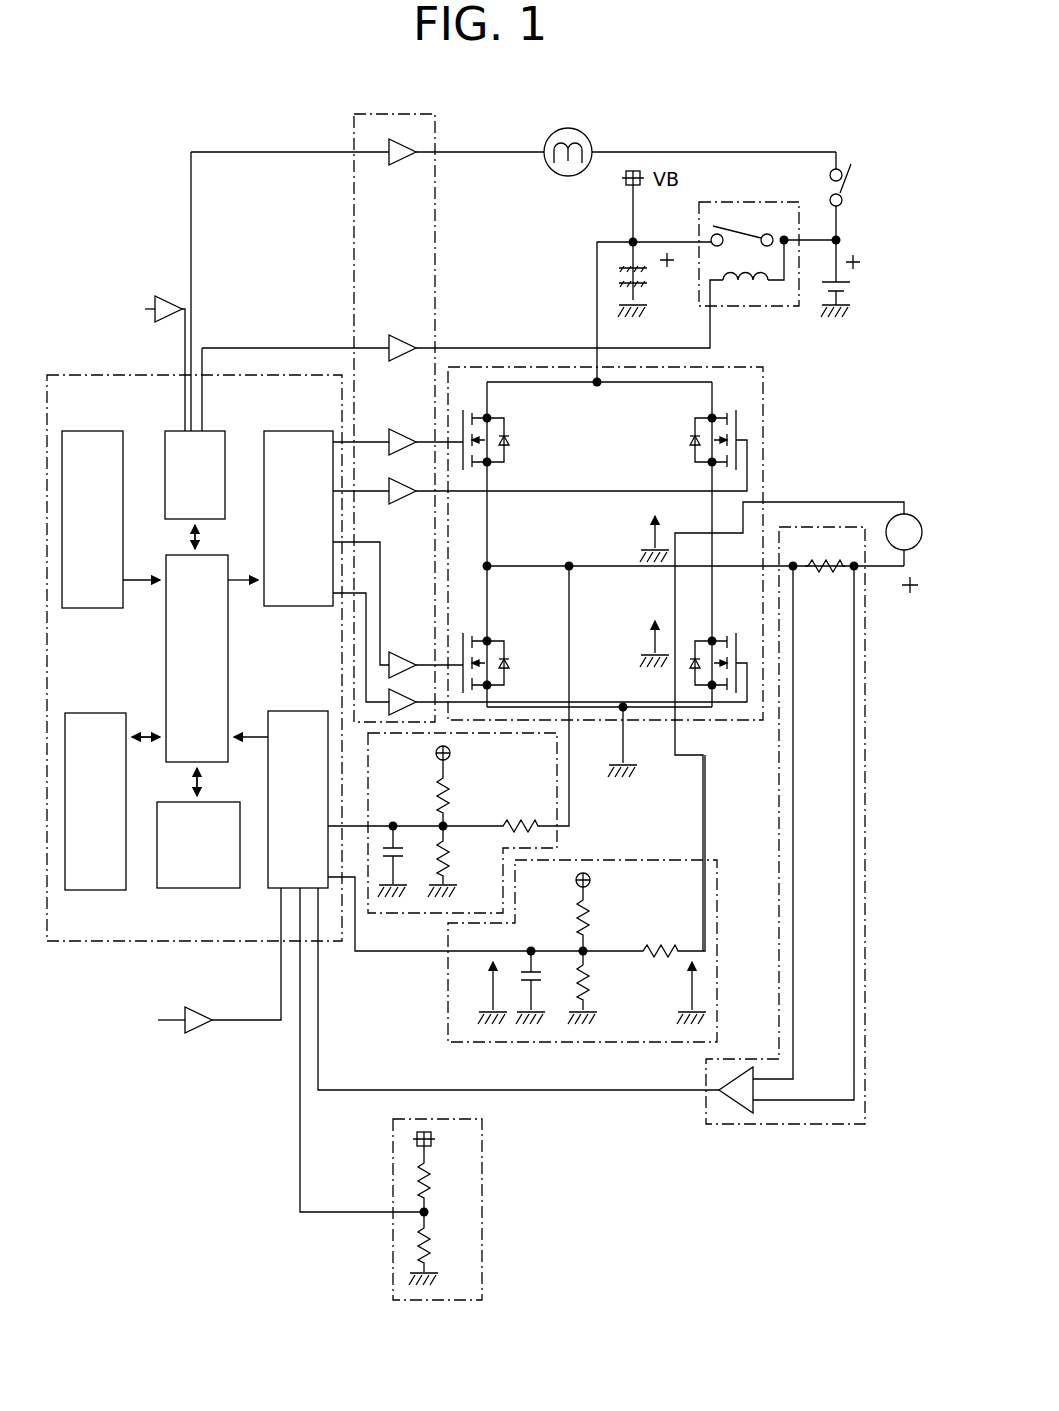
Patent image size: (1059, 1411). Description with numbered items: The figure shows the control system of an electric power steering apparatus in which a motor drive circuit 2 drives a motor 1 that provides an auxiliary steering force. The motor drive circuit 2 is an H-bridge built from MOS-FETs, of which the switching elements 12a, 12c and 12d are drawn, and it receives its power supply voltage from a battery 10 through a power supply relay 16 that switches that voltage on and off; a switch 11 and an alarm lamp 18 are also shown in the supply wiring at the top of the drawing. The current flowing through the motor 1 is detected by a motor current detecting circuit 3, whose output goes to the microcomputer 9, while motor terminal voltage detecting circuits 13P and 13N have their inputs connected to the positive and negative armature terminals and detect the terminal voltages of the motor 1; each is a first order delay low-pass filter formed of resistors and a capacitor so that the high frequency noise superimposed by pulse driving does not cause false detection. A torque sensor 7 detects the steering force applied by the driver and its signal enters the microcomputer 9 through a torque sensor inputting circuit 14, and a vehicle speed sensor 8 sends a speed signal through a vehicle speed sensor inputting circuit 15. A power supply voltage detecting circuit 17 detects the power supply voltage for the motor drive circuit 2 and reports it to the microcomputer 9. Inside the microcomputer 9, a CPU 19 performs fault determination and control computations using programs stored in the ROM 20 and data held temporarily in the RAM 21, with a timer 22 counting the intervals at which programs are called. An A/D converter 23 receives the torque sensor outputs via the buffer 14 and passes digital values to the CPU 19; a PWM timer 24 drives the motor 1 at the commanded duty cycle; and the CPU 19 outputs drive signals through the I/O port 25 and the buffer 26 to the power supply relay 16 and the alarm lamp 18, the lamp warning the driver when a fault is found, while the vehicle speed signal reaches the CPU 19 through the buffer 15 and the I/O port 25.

The motor 1 is at (894, 512).
The motor drive circuit 2 is at (660, 572).
The motor current detecting circuit 3 is at (787, 1125).
The torque sensor 7 is at (98, 1048).
The vehicle speed sensor 8 is at (84, 285).
The microcomputer 9 is at (212, 941).
The battery 10 is at (859, 281).
The ignition switch 11 is at (856, 186).
The MOS-FET 12a is at (506, 436).
The MOS-FET 12c is at (502, 640).
The MOS-FET 12d is at (672, 433).
The motor terminal voltage detecting circuit 13P is at (557, 851).
The motor terminal voltage detecting circuit 13N is at (680, 860).
The torque sensor inputting circuit 14 is at (200, 1033).
The vehicle speed sensor inputting circuit 15 is at (172, 298).
The power supply relay 16 is at (755, 306).
The power supply voltage detecting circuit 17 is at (482, 1148).
The alarm lamp 18 is at (566, 128).
The CPU 19 is at (166, 762).
The ROM 20 is at (75, 608).
The RAM 21 is at (118, 713).
The timer 22 is at (193, 888).
The A/D converter 23 is at (314, 711).
The PWM timer 24 is at (270, 606).
The I/O port 25 is at (165, 503).
The buffer 26 is at (437, 240).